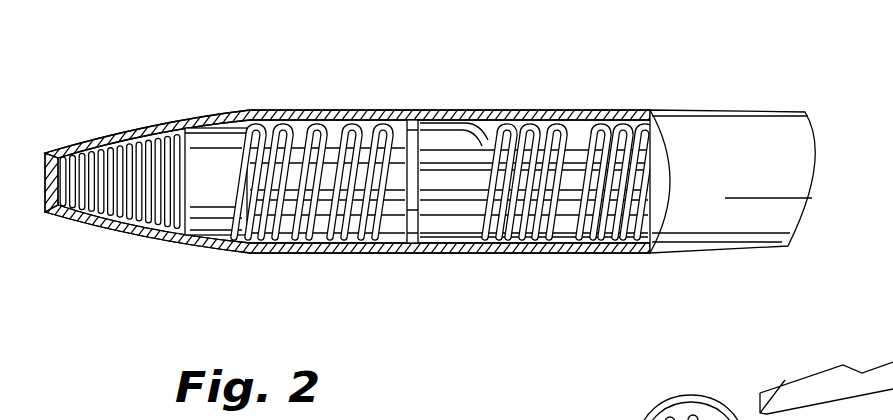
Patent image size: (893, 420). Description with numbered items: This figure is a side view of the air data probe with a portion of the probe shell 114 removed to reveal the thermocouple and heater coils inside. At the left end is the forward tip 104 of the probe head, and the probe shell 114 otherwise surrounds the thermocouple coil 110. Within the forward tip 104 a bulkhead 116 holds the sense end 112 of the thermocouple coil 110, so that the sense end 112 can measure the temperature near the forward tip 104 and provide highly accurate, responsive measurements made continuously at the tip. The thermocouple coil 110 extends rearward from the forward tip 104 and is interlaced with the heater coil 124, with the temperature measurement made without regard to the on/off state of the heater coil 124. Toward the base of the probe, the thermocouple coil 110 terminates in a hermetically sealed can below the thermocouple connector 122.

The forward tip 104 is at (93, 231).
The thermocouple coil 110 is at (518, 118).
The sense end 112 is at (200, 233).
The probe shell 114 is at (732, 117).
The bulkhead 116 is at (204, 145).
The heater coil 124 is at (487, 131).
The thermocouple connector 122 is at (625, 418).